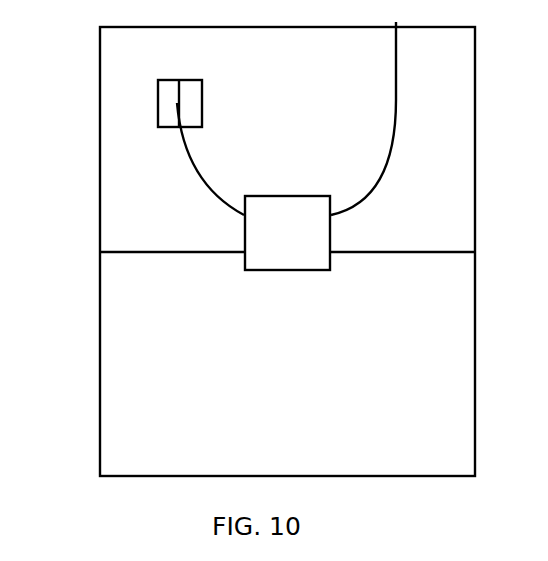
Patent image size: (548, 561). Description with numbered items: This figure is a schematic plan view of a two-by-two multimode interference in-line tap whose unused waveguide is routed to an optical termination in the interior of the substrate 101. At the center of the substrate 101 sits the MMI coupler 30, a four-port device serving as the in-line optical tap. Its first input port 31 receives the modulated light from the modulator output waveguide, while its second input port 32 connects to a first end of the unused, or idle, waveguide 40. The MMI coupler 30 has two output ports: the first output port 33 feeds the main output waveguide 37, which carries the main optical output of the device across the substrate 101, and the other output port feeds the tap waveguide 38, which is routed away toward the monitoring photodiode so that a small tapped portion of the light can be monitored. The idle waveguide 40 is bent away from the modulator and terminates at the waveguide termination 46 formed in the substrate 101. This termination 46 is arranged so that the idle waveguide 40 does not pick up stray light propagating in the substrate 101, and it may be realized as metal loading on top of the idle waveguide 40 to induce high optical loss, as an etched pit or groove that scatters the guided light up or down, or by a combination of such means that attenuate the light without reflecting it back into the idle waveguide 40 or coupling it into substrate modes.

The substrate 101 is at (464, 76).
The main output waveguide 37 is at (405, 252).
The MMI coupler 30 is at (302, 270).
The first input port 31 is at (245, 255).
The second input port 32 is at (242, 215).
The first output port 33 is at (332, 255).
The tap waveguide 38 is at (390, 146).
The idle waveguide 40 is at (197, 166).
The waveguide termination 46 is at (158, 94).